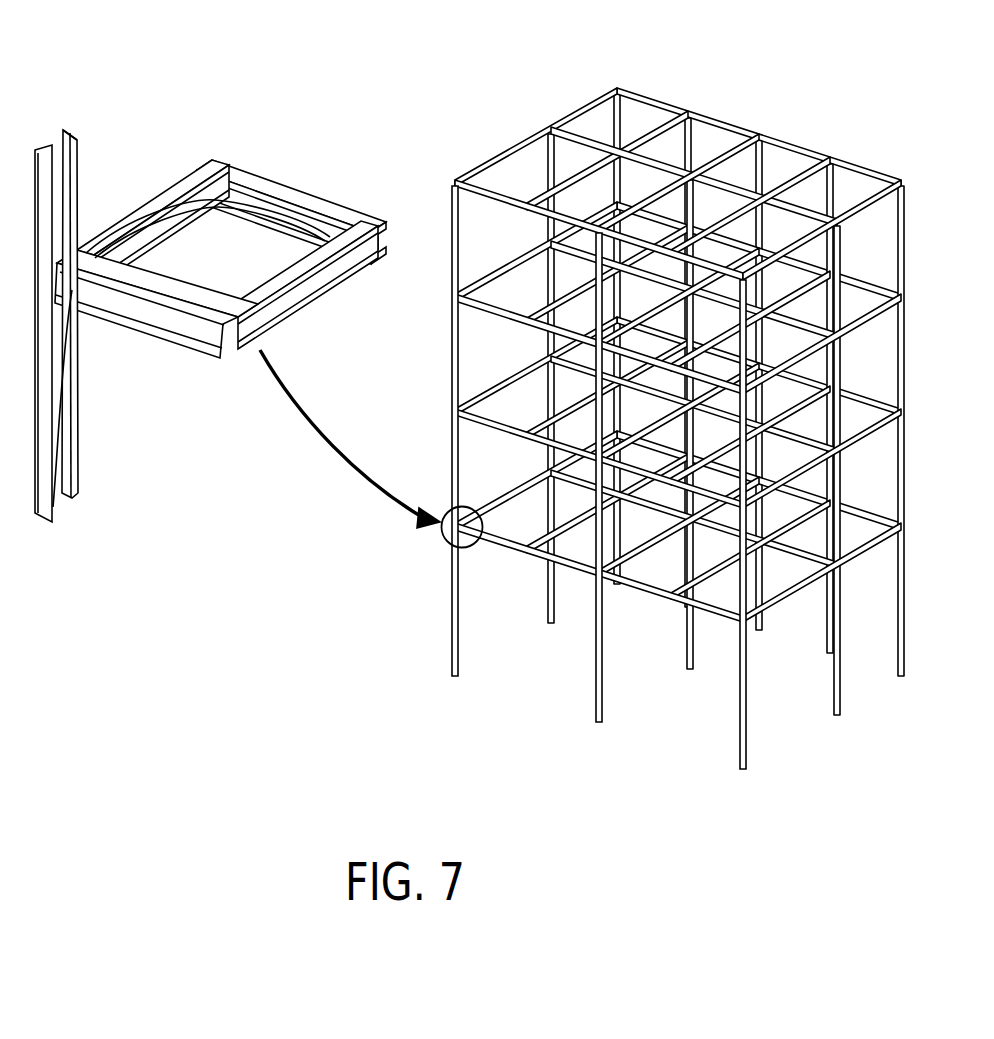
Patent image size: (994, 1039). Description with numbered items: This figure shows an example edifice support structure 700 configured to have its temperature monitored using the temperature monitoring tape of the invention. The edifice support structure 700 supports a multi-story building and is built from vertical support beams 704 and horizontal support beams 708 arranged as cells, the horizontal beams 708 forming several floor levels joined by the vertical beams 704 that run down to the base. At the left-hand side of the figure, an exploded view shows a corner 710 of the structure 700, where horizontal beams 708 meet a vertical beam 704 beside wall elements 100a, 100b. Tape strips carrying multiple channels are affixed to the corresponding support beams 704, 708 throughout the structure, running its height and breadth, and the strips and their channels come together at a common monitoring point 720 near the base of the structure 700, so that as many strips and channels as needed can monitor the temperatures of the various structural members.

The edifice support structure 700 is at (478, 434).
The vertical support beams 704 is at (594, 678).
The horizontal support beams 708 is at (490, 497).
The corner 710 is at (447, 537).
The common monitoring point 720 is at (747, 745).
The wall panel 100a is at (62, 488).
The wall panel 100b is at (53, 517).